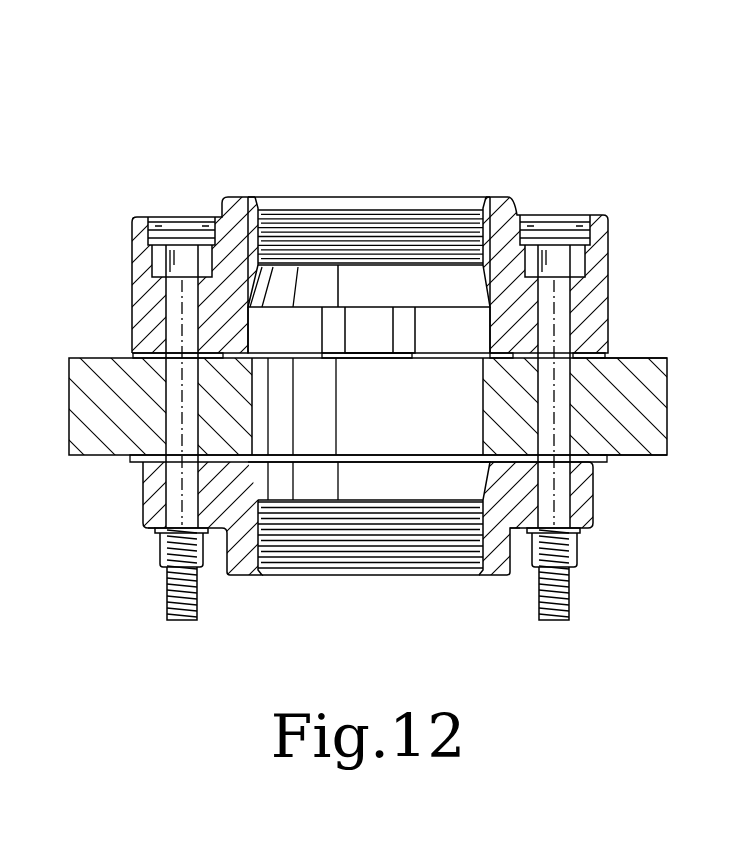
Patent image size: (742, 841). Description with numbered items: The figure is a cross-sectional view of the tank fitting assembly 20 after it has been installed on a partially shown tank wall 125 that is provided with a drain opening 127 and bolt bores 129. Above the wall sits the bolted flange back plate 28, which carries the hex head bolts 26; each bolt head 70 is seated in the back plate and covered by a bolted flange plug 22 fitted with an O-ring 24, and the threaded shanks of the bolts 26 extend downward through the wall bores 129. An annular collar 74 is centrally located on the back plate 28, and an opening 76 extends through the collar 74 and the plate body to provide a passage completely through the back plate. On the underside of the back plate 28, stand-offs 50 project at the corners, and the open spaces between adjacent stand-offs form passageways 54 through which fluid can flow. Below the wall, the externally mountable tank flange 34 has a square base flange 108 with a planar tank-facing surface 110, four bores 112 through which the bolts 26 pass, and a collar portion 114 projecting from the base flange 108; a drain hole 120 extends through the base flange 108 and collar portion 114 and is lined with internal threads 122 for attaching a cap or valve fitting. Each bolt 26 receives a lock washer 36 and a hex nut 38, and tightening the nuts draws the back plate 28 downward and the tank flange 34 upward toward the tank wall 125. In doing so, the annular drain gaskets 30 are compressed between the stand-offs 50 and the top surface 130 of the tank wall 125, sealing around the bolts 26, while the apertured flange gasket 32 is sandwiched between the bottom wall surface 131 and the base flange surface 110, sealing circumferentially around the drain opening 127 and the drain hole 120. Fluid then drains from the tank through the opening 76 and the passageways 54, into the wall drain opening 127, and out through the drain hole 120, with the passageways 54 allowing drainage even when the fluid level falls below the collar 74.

The tank fitting assembly 20 is at (606, 121).
The bolted flange plug 22 is at (177, 221).
The O-ring 24 is at (160, 233).
The hex head bolt 26 is at (177, 297).
The bolted flange back plate 28 is at (617, 235).
The annular drain gasket 30 is at (142, 358).
The apertured flange gasket 32 is at (393, 458).
The externally mountable tank flange 34 is at (603, 521).
The lock washer 36 is at (585, 532).
The hex nut 38 is at (572, 568).
The stand-off 50 is at (370, 325).
The passageway 54 is at (290, 332).
The bolt head 70 is at (160, 260).
The annular collar 74 is at (506, 213).
The opening 76 is at (309, 218).
The base flange 108 is at (145, 498).
The tank-facing surface 110 is at (511, 530).
The bore 112 is at (152, 530).
The collar portion 114 is at (238, 560).
The drain hole 120 is at (437, 488).
The internal threads 122 is at (375, 560).
The tank wall 125 is at (375, 402).
The drain opening 127 is at (415, 433).
The bolt bore 129 is at (167, 407).
The top surface 130 is at (658, 357).
The bottom wall surface 131 is at (655, 457).